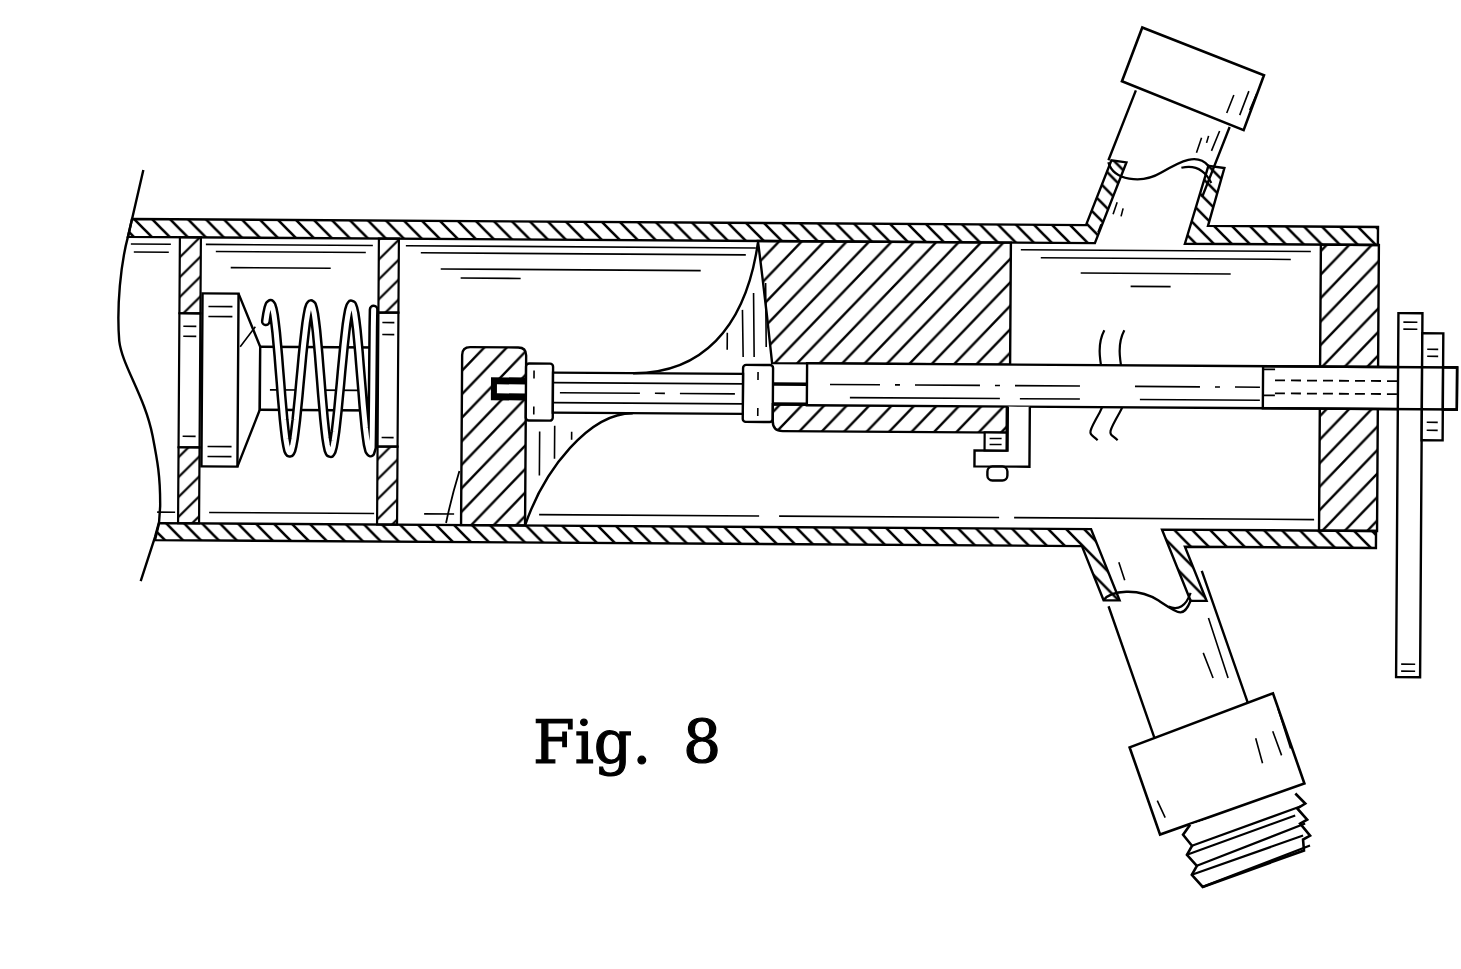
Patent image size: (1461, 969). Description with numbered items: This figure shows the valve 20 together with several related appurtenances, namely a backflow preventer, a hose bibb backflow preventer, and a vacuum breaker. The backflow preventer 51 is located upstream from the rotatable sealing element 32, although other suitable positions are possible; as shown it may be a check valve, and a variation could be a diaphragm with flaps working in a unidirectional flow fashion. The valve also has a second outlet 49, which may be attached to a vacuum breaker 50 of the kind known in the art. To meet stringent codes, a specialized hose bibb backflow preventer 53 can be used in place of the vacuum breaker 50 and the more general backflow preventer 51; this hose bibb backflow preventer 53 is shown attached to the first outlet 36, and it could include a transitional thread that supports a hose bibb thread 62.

The valve 20 is at (642, 183).
The rotatable sealing element 32 is at (687, 416).
The first outlet 36 is at (1127, 661).
The second outlet 49 is at (1122, 116).
The vacuum breaker 50 is at (1257, 100).
The backflow preventer 51 is at (252, 456).
The hose bibb backflow preventer 53 is at (1297, 753).
The hose bibb thread 62 is at (1197, 877).